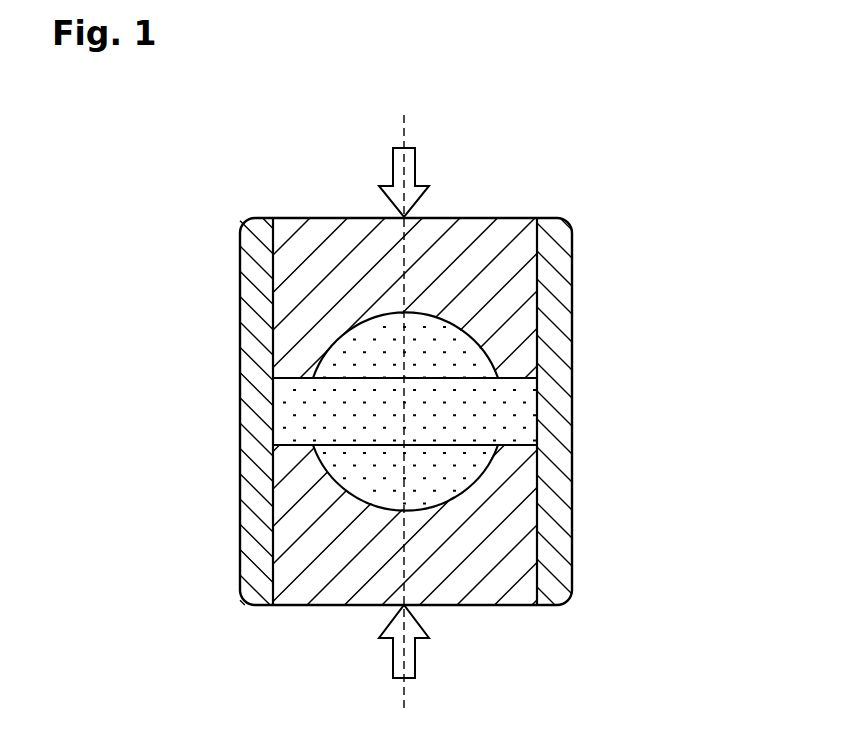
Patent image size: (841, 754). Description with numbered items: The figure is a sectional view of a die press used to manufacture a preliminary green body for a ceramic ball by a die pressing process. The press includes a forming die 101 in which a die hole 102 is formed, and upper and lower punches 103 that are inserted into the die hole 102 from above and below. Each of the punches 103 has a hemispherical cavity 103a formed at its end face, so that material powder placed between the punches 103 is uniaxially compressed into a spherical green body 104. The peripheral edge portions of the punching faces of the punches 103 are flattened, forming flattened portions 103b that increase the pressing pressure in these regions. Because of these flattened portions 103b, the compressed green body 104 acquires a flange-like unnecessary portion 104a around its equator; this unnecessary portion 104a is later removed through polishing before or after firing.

The forming die 101 is at (560, 375).
The die hole 102 is at (537, 310).
The upper and lower punches 103 is at (470, 227).
The hemispherical cavity 103a is at (342, 340).
The flattened portions 103b is at (515, 442).
The green body 104 is at (452, 492).
The flange-like unnecessary portion 104a is at (292, 415).